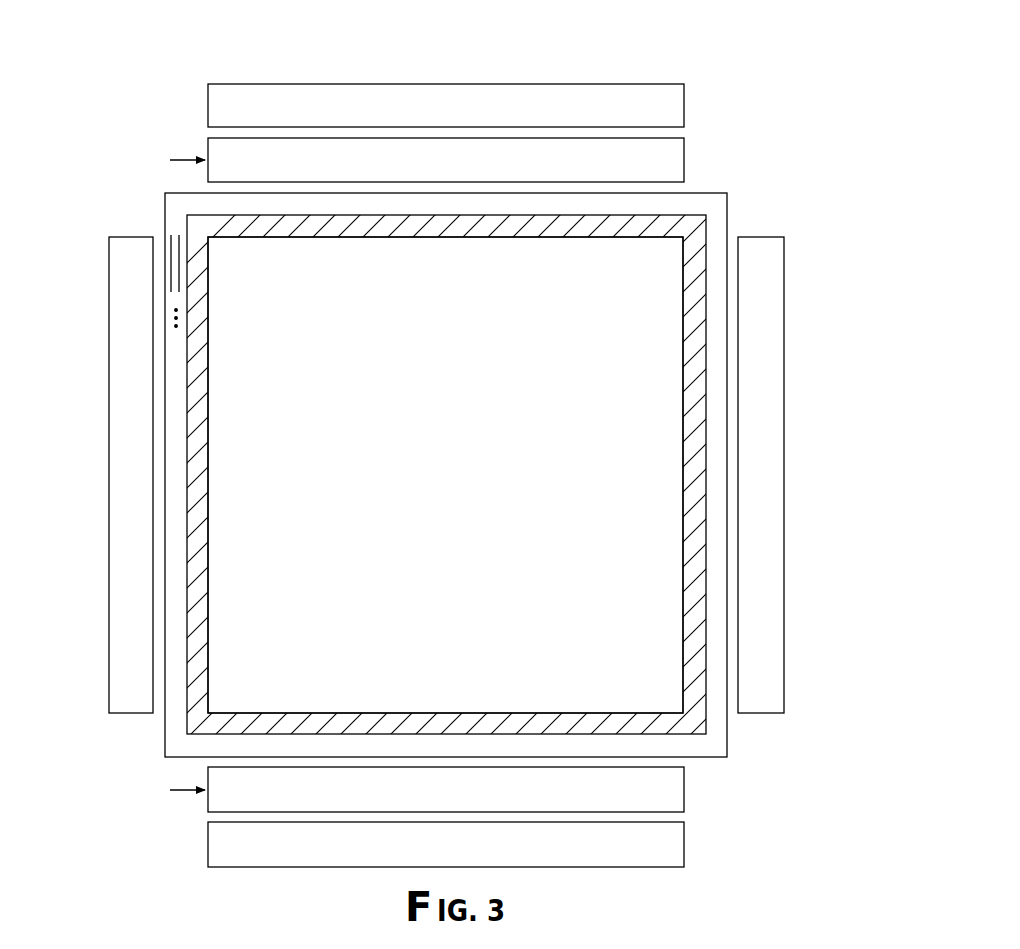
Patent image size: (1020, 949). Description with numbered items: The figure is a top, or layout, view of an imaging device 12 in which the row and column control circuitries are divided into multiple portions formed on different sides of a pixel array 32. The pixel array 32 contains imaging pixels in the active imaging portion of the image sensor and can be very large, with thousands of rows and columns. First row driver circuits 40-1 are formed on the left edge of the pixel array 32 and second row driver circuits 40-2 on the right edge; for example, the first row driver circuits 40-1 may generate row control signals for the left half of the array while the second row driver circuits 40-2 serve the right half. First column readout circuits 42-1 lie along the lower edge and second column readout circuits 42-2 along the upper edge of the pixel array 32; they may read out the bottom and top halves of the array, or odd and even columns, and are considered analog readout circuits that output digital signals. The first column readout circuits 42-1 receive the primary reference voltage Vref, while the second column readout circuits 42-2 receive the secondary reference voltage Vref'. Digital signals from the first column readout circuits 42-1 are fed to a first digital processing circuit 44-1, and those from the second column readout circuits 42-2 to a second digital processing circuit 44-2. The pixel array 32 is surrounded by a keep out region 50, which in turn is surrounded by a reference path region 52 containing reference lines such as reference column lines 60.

The imaging device 12 is at (852, 52).
The pixel array 32 is at (461, 490).
The first row driver circuits 40-1 is at (120, 303).
The second row driver circuits 40-2 is at (773, 270).
The first column readout circuits 42-1 is at (678, 788).
The second column readout circuits 42-2 is at (678, 160).
The first digital processing circuit 44-1 is at (678, 838).
The second digital processing circuit 44-2 is at (678, 102).
The keep out region 50 is at (700, 228).
The reference path region 52 is at (717, 723).
The reference column lines 60 is at (167, 237).